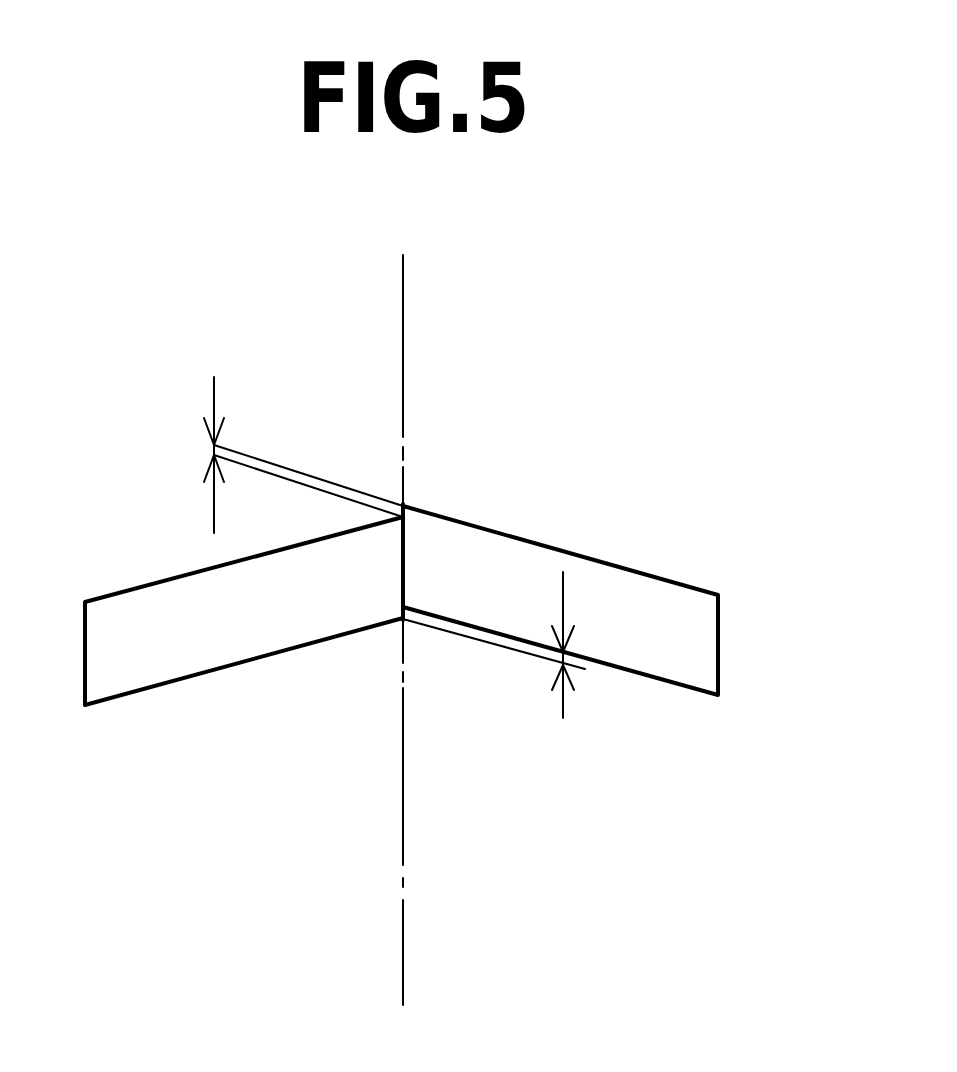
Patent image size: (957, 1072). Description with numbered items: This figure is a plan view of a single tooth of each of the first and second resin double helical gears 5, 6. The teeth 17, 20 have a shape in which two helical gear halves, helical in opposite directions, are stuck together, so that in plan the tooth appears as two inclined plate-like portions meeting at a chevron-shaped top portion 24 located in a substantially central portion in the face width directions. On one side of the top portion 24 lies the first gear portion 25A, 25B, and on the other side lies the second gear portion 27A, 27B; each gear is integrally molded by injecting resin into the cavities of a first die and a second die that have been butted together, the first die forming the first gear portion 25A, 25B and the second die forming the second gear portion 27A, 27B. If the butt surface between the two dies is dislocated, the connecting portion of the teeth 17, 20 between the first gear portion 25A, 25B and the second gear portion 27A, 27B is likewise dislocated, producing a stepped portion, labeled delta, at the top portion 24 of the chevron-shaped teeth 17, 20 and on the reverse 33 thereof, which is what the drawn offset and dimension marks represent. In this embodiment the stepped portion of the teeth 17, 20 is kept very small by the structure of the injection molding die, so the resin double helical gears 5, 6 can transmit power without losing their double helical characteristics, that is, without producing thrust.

The first resin double helical gear 5 is at (463, 612).
The second resin double helical gear 6 is at (459, 612).
The tooth 17 is at (637, 656).
The tooth 20 is at (637, 656).
The chevron-shaped top portion 24 is at (403, 502).
The first gear portion 25A is at (225, 683).
The first gear portion 25B is at (133, 677).
The second gear portion 27A is at (637, 684).
The second gear portion 27B is at (872, 862).
The reverse 33 is at (402, 622).